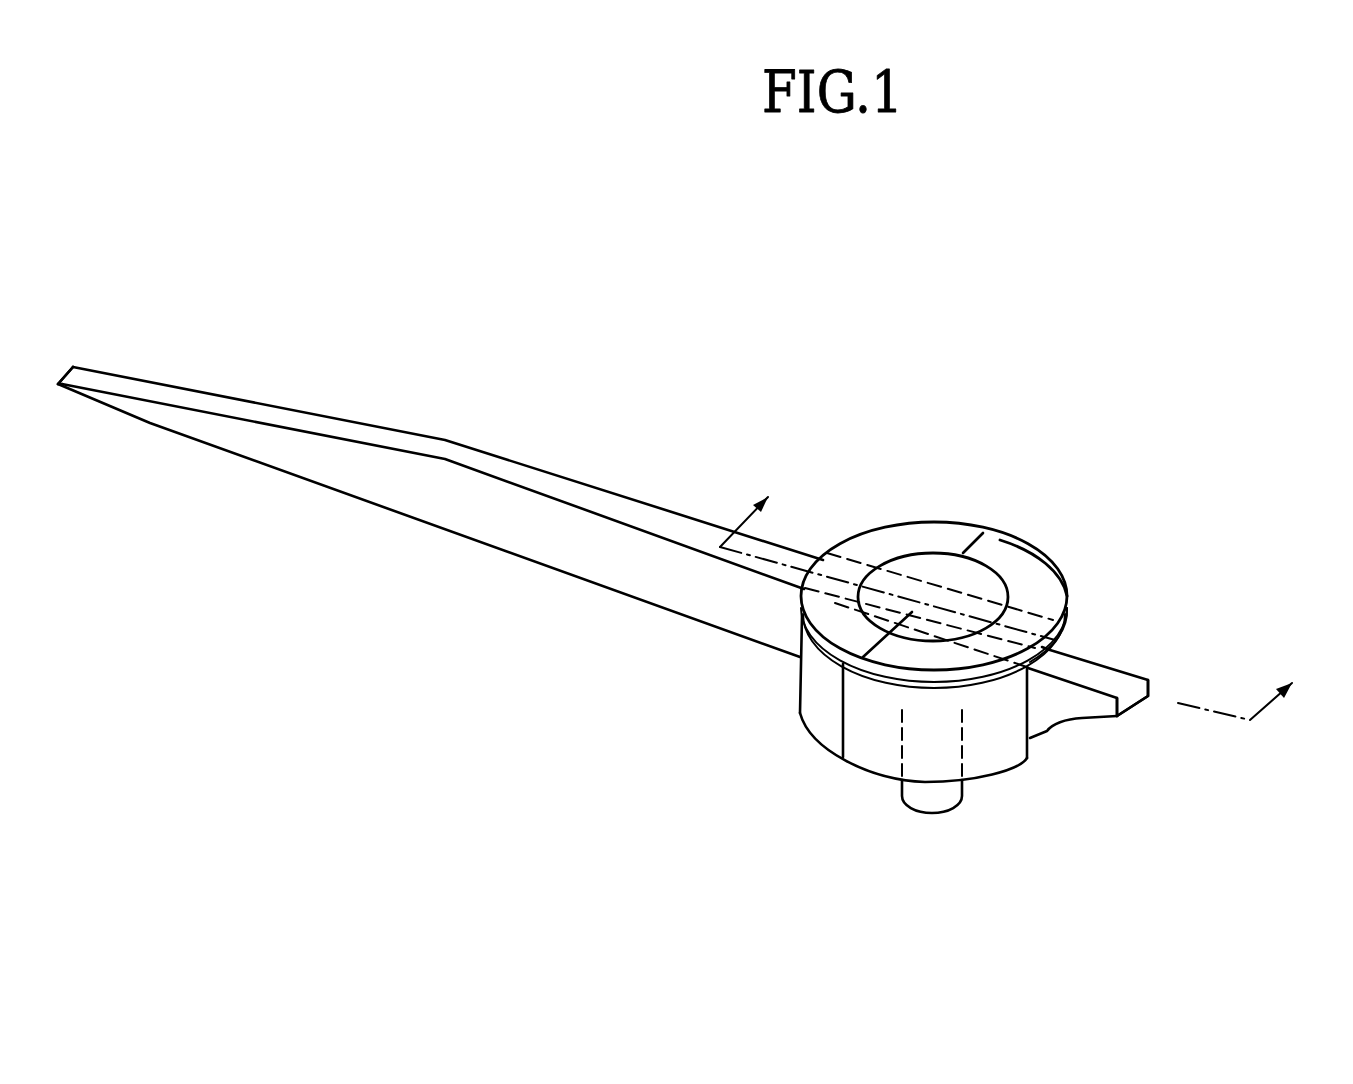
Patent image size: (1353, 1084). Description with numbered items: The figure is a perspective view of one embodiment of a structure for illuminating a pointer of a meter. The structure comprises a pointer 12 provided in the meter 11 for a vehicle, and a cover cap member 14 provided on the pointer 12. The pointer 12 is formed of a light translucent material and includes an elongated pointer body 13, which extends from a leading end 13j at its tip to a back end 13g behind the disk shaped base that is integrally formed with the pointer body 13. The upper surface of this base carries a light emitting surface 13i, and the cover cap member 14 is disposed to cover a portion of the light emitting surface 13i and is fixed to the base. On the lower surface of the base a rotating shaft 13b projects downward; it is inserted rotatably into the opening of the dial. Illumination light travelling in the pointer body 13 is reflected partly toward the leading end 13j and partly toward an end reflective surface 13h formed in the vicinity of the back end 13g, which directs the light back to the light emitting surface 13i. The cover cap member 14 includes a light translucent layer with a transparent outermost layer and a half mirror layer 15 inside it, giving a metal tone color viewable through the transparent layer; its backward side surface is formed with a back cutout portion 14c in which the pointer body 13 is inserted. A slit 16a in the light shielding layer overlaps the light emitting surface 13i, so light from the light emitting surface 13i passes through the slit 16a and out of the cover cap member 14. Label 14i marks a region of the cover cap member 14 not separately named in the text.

The meter 11 is at (1123, 573).
The pointer 12 is at (877, 360).
The pointer body 13 is at (683, 510).
The cover cap member 14 is at (892, 522).
The half mirror layer 15 is at (1027, 543).
The slit 16a is at (929, 586).
The top surface of disc 14i is at (1033, 573).
The back cutout portion 14c is at (1087, 653).
The light emitting surface 13i is at (1125, 737).
The back end 13g is at (1135, 702).
The end reflective surface 13h is at (1080, 720).
The rotating shaft 13b is at (922, 797).
The leading end 13j is at (60, 372).